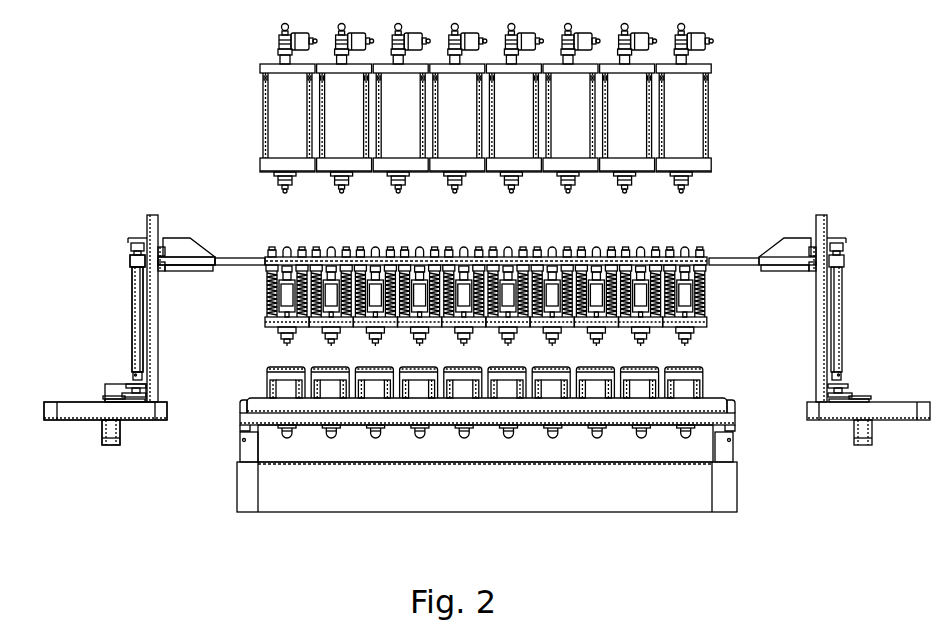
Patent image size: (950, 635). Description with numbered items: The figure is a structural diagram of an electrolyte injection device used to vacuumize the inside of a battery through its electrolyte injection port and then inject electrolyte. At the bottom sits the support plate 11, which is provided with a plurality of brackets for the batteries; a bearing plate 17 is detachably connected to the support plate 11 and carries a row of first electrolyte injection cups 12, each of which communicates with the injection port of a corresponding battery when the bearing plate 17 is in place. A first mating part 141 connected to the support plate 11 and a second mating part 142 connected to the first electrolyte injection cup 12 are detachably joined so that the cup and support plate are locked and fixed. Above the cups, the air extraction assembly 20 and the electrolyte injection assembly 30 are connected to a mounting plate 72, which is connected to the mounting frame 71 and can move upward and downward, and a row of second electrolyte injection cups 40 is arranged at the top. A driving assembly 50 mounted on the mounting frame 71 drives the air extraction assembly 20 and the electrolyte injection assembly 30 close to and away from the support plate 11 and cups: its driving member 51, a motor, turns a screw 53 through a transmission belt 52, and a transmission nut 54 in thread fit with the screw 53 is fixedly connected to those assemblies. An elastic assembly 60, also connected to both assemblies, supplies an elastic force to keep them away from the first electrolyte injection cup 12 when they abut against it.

The support plate 11 is at (368, 495).
The first electrolyte injection cup 12 is at (470, 390).
The bearing plate 17 is at (418, 415).
The first mating part 141 is at (240, 404).
The second mating part 142 is at (240, 425).
The air extraction assembly 20 is at (683, 250).
The electrolyte injection assembly 30 is at (690, 333).
The second electrolyte injection cup 40 is at (697, 118).
The driving assembly 50 is at (470, 348).
The driving member 51 is at (114, 444).
The transmission belt 52 is at (115, 397).
The screw 53 is at (136, 350).
The transmission nut 54 is at (133, 264).
The elastic assembly 60 is at (700, 297).
The mounting frame 71 is at (60, 422).
The mounting plate 72 is at (190, 258).